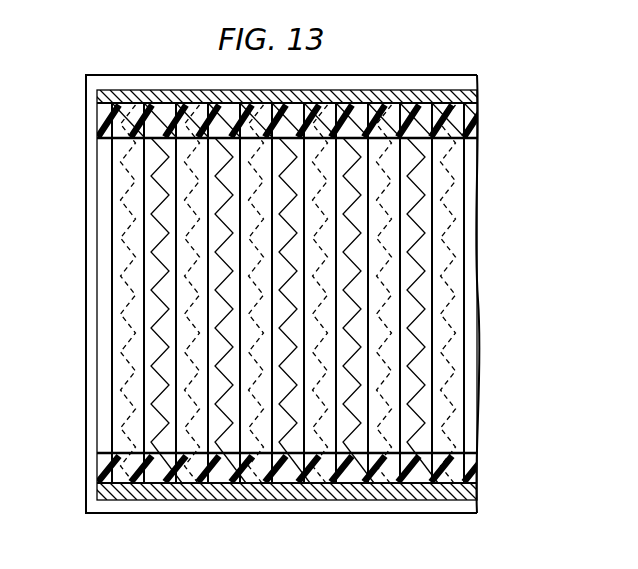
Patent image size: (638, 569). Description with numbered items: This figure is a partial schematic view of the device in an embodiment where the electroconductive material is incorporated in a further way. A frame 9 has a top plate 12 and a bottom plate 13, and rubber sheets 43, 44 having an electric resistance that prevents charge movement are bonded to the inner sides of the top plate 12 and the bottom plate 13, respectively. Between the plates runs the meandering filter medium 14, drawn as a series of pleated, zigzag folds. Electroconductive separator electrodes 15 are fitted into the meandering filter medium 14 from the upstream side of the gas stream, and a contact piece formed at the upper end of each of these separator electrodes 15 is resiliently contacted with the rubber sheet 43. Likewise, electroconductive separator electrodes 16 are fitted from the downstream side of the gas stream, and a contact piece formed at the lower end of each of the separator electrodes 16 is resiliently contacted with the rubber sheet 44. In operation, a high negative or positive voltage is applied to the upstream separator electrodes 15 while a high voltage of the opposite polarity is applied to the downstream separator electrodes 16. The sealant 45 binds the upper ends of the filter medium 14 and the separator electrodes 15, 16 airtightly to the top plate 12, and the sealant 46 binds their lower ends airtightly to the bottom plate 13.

The frame 9 is at (83, 288).
The top plate 12 is at (470, 78).
The bottom plate 13 is at (470, 508).
The meandering filter medium 14 is at (142, 214).
The electroconductive separator electrodes 15 is at (130, 372).
The electroconductive separator electrodes 16 is at (158, 420).
The rubber sheet 43 is at (466, 96).
The rubber sheet 44 is at (468, 490).
The sealant 45 is at (468, 120).
The sealant 46 is at (470, 468).